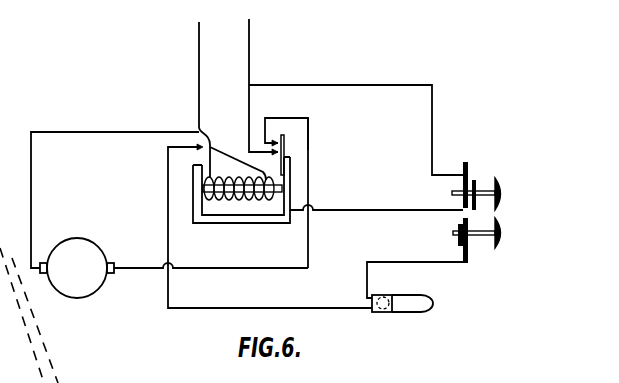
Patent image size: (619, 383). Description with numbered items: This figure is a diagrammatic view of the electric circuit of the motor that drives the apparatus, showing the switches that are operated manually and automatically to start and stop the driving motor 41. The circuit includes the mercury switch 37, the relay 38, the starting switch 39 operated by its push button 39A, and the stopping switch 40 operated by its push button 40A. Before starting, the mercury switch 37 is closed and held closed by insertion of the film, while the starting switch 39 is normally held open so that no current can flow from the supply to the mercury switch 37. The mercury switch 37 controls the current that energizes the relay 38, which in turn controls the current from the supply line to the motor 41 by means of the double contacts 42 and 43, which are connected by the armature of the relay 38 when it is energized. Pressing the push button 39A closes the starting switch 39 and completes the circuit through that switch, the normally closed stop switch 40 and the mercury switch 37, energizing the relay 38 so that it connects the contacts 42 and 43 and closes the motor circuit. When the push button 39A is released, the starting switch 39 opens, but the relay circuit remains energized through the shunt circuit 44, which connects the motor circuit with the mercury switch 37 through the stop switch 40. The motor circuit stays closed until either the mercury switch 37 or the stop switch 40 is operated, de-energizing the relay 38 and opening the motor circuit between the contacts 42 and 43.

The mercury switch 37 is at (413, 312).
The relay 38 is at (246, 223).
The starting switch 39 is at (470, 165).
The push button 39A is at (505, 193).
The stopping switch 40 is at (458, 243).
The push button 40A is at (505, 233).
The driving motor 41 is at (91, 248).
The double contact 42 is at (283, 141).
The double contact 43 is at (285, 150).
The shunt circuit 44 is at (340, 212).